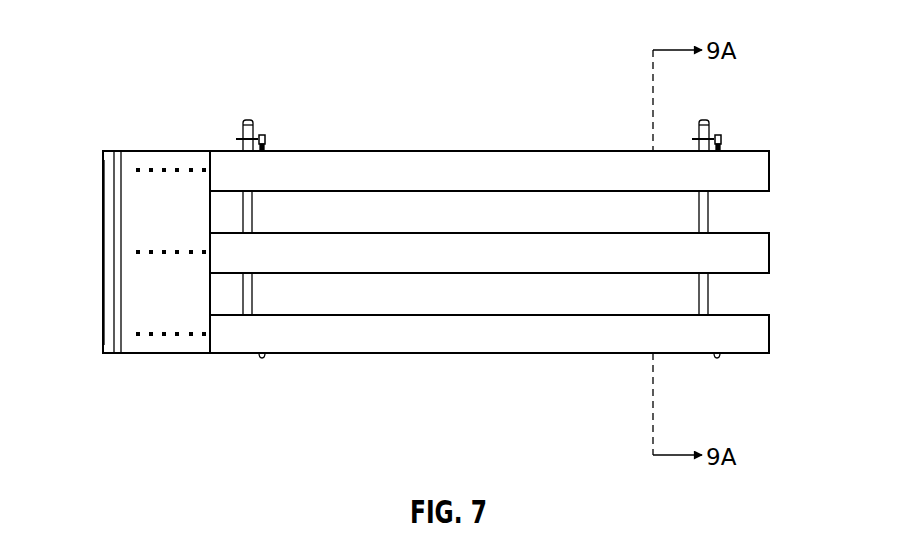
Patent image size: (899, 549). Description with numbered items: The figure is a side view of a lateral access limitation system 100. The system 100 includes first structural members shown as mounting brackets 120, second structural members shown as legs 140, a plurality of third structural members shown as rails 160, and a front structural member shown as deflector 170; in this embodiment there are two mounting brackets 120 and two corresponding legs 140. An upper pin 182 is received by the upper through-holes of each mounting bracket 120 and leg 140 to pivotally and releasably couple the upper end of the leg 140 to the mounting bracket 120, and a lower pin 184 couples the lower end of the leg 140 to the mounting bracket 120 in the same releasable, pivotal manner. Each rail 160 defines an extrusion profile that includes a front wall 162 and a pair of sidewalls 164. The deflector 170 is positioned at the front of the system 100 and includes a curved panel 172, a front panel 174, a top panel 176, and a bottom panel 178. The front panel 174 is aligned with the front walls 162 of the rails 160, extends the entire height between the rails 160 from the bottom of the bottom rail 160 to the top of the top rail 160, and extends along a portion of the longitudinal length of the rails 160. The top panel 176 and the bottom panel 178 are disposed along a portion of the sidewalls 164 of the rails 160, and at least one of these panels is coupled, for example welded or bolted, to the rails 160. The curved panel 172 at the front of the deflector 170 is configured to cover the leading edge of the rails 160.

The lateral access limitation system 100 is at (118, 53).
The mounting bracket 120 is at (245, 118).
The leg 140 is at (257, 226).
The rail 160 is at (775, 172).
The front wall 162 is at (518, 167).
The sidewall 164 is at (462, 150).
The deflector 170 is at (103, 378).
The curved panel 172 is at (110, 190).
The front panel 174 is at (138, 207).
The top panel 176 is at (118, 136).
The bottom panel 178 is at (191, 357).
The upper pin 182 is at (278, 140).
The lower pin 184 is at (262, 358).